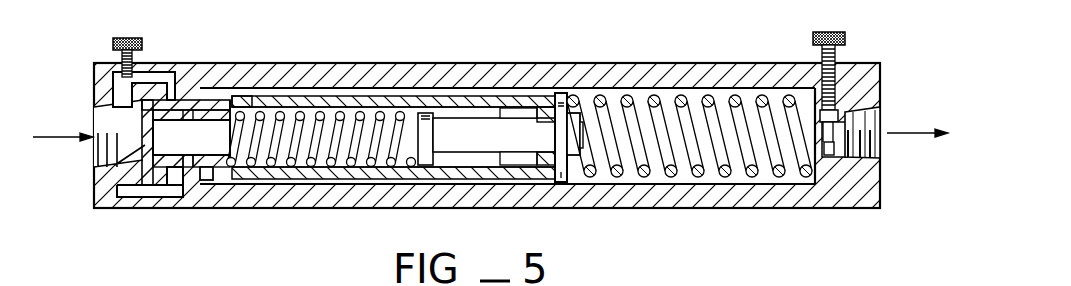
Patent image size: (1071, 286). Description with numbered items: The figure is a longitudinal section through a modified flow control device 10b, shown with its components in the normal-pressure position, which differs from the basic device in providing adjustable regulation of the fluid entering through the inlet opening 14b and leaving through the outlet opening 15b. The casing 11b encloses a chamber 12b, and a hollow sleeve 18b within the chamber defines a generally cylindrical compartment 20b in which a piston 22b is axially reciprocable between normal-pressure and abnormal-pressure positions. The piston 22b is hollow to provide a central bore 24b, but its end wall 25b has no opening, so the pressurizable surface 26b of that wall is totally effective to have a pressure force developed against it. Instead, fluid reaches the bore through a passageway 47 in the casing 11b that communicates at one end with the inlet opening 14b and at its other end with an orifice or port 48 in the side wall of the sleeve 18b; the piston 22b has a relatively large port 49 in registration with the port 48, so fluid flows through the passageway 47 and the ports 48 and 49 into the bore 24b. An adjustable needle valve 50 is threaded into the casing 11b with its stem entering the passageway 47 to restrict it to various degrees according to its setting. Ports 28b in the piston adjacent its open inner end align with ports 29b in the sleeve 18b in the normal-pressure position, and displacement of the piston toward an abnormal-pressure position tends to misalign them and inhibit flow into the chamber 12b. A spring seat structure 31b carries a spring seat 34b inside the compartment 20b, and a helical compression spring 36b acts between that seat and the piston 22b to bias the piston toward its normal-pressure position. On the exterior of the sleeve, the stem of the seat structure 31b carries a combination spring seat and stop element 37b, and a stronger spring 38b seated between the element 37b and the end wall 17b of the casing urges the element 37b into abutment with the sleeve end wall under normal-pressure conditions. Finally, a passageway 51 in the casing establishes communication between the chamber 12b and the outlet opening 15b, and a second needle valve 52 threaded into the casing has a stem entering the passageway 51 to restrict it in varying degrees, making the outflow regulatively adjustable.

The flow control device 10b is at (524, 57).
The casing 11b is at (452, 63).
The chamber 12b is at (737, 173).
The inlet opening 14b is at (97, 145).
The outlet opening 15b is at (870, 143).
The end wall 17b is at (867, 190).
The sleeve 18b is at (388, 102).
The compartment 20b is at (360, 160).
The piston 22b is at (236, 99).
The bore 24b is at (213, 128).
The end wall 25b is at (138, 180).
The pressurizable surface 26b is at (142, 162).
The piston ports 28b is at (213, 160).
The sleeve ports 29b is at (208, 173).
The spring seat structure 31b is at (477, 146).
The spring seat 34b is at (427, 155).
The helical compression spring 36b is at (320, 113).
The combination spring seat and stop element 37b is at (561, 182).
The spring structure 38b is at (710, 100).
The passageway 47 is at (157, 77).
The port 48 is at (173, 100).
The port 49 is at (175, 113).
The adjustable needle valve 50 is at (123, 40).
The passageway 51 is at (830, 157).
The needle valve 52 is at (842, 35).